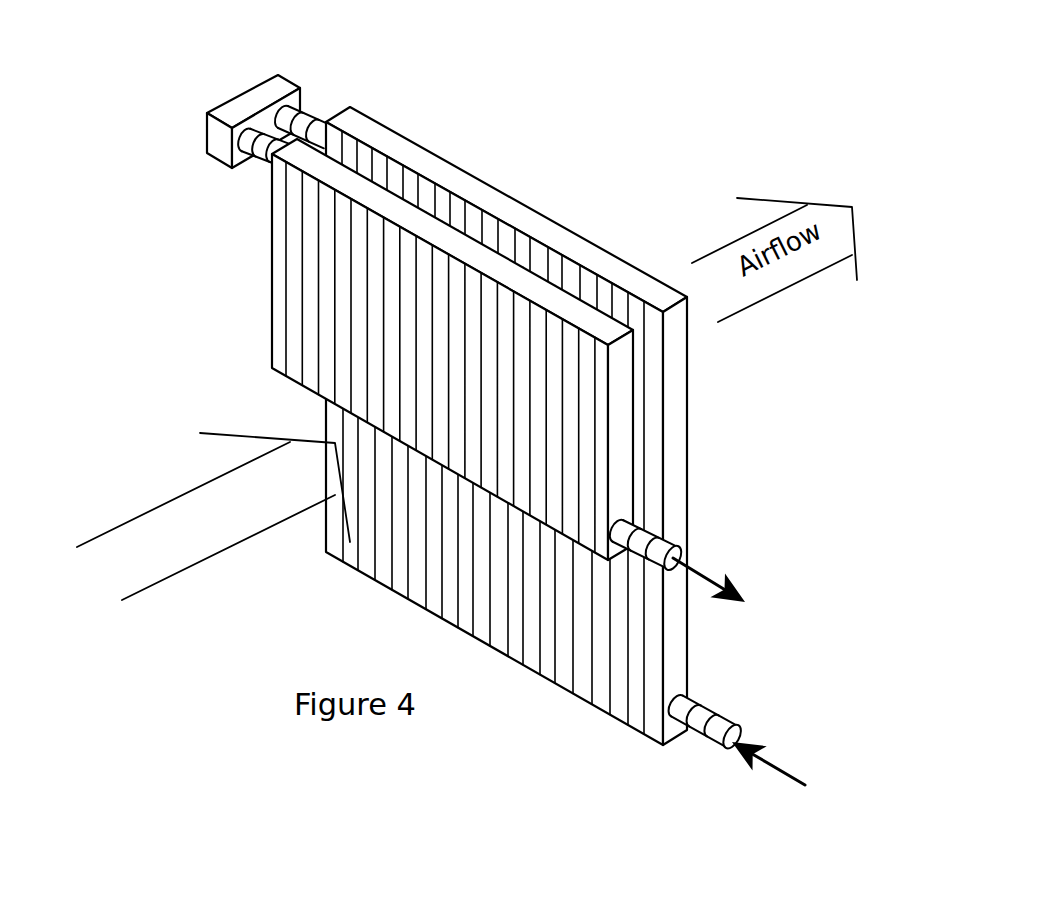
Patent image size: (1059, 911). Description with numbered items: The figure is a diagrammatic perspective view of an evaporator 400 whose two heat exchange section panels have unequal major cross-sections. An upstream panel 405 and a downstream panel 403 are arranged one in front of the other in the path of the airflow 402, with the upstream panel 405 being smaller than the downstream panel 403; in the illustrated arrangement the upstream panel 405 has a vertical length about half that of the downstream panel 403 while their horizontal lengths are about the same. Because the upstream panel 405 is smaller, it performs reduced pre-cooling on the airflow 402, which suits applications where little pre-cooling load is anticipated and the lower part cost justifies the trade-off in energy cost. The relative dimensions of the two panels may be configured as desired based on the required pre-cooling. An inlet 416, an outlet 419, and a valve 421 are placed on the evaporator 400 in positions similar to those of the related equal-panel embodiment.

The evaporator 400 is at (509, 399).
The valve 421 is at (302, 93).
The downstream panel 403 is at (678, 493).
The upstream panel 405 is at (615, 432).
The outlet 419 is at (668, 545).
The inlet 416 is at (718, 707).
The airflow 402 is at (218, 525).